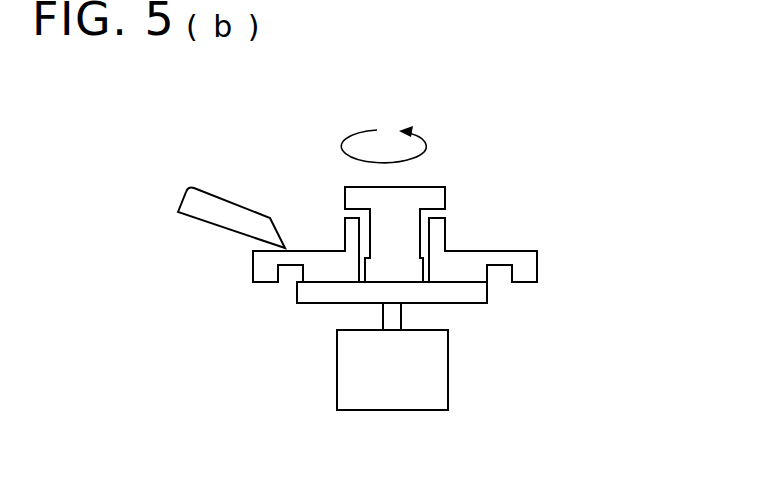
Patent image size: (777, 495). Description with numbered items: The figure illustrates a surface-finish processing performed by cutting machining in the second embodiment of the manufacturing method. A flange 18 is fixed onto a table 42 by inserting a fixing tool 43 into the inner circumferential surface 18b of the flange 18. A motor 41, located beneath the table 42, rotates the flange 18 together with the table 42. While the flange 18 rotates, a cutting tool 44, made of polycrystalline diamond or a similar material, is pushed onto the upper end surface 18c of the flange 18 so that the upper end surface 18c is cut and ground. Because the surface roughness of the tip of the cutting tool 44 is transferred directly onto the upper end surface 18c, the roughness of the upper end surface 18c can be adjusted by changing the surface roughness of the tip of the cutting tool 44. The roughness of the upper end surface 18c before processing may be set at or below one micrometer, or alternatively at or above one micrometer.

The flange 18 is at (541, 270).
The inner circumferential surface 18b is at (414, 219).
The upper end surface 18c is at (512, 251).
The motor 41 is at (450, 382).
The table 42 is at (470, 305).
The fixing tool 43 is at (445, 200).
The cutting tool 44 is at (227, 210).